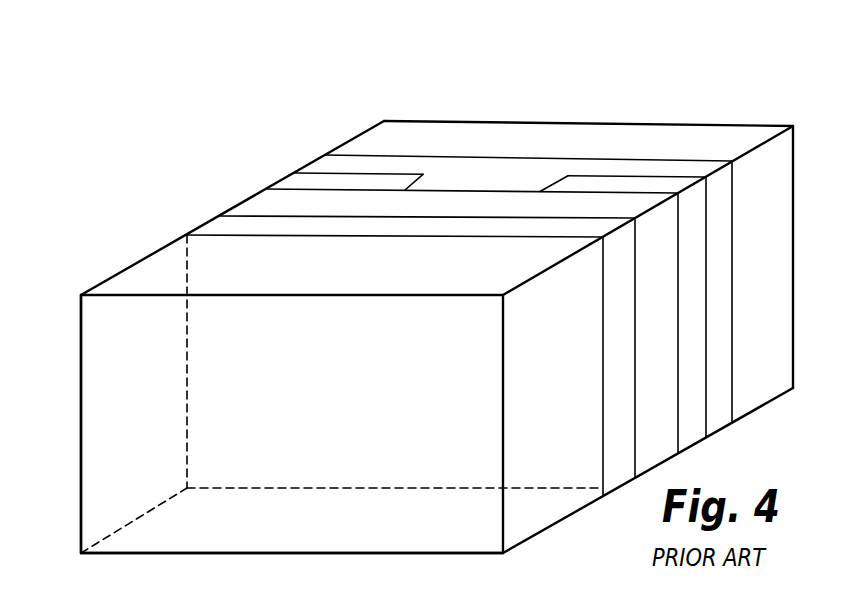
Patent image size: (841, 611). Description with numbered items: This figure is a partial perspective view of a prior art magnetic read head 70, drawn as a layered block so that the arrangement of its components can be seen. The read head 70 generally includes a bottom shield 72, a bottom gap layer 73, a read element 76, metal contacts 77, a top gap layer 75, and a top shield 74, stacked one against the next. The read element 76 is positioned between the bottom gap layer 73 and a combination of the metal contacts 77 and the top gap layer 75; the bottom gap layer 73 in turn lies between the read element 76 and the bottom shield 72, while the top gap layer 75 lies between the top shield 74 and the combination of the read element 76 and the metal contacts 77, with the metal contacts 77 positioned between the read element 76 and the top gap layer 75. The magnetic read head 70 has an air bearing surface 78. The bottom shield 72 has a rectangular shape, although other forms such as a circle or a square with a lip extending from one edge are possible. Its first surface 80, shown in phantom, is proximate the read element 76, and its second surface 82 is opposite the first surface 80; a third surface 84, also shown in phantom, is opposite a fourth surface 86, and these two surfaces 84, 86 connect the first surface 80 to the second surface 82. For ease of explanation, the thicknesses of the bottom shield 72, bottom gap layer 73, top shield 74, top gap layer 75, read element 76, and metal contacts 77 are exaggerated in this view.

The magnetic read head 70 is at (682, 102).
The bottom shield 72 is at (566, 351).
The bottom gap layer 73 is at (617, 277).
The top shield 74 is at (781, 223).
The top gap layer 75 is at (722, 268).
The read element 76 is at (670, 261).
The metal contacts 77 is at (378, 182).
The air bearing surface 78 is at (349, 140).
The first surface 80 is at (253, 275).
The second surface 82 is at (255, 525).
The third surface 84 is at (122, 436).
The fourth surface 86 is at (552, 502).